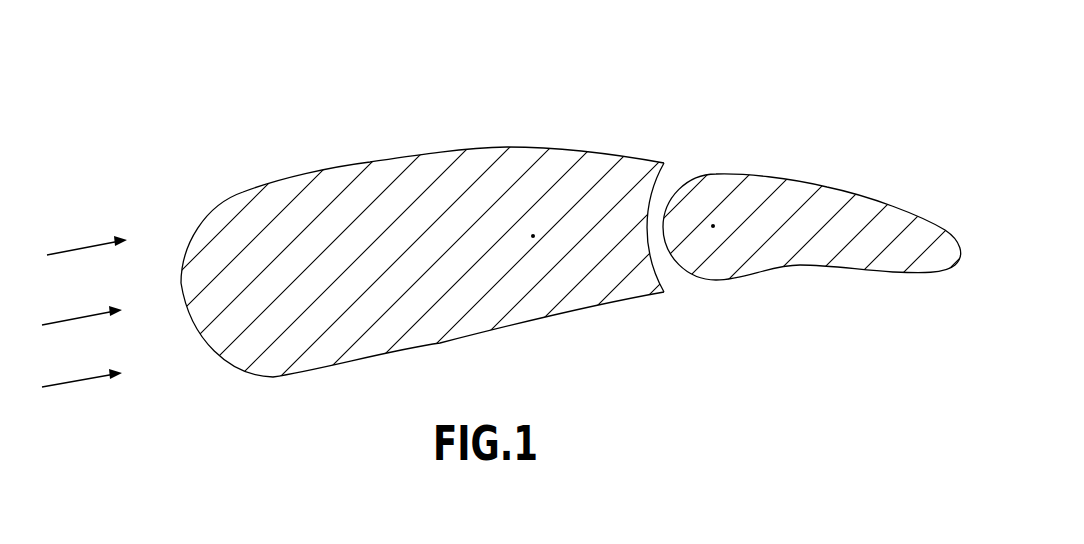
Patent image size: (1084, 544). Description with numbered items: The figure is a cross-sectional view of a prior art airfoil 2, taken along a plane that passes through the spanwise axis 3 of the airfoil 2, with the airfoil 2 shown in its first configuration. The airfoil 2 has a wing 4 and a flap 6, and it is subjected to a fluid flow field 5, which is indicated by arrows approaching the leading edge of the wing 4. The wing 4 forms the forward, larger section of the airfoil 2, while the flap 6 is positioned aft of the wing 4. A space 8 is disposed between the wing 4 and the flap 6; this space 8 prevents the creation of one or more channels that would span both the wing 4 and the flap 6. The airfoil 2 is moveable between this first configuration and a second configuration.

The airfoil 2 is at (742, 62).
The spanwise axis 3 is at (533, 236).
The wing 4 is at (331, 153).
The fluid flow field 5 is at (82, 213).
The flap 6 is at (891, 192).
The space 8 is at (682, 286).